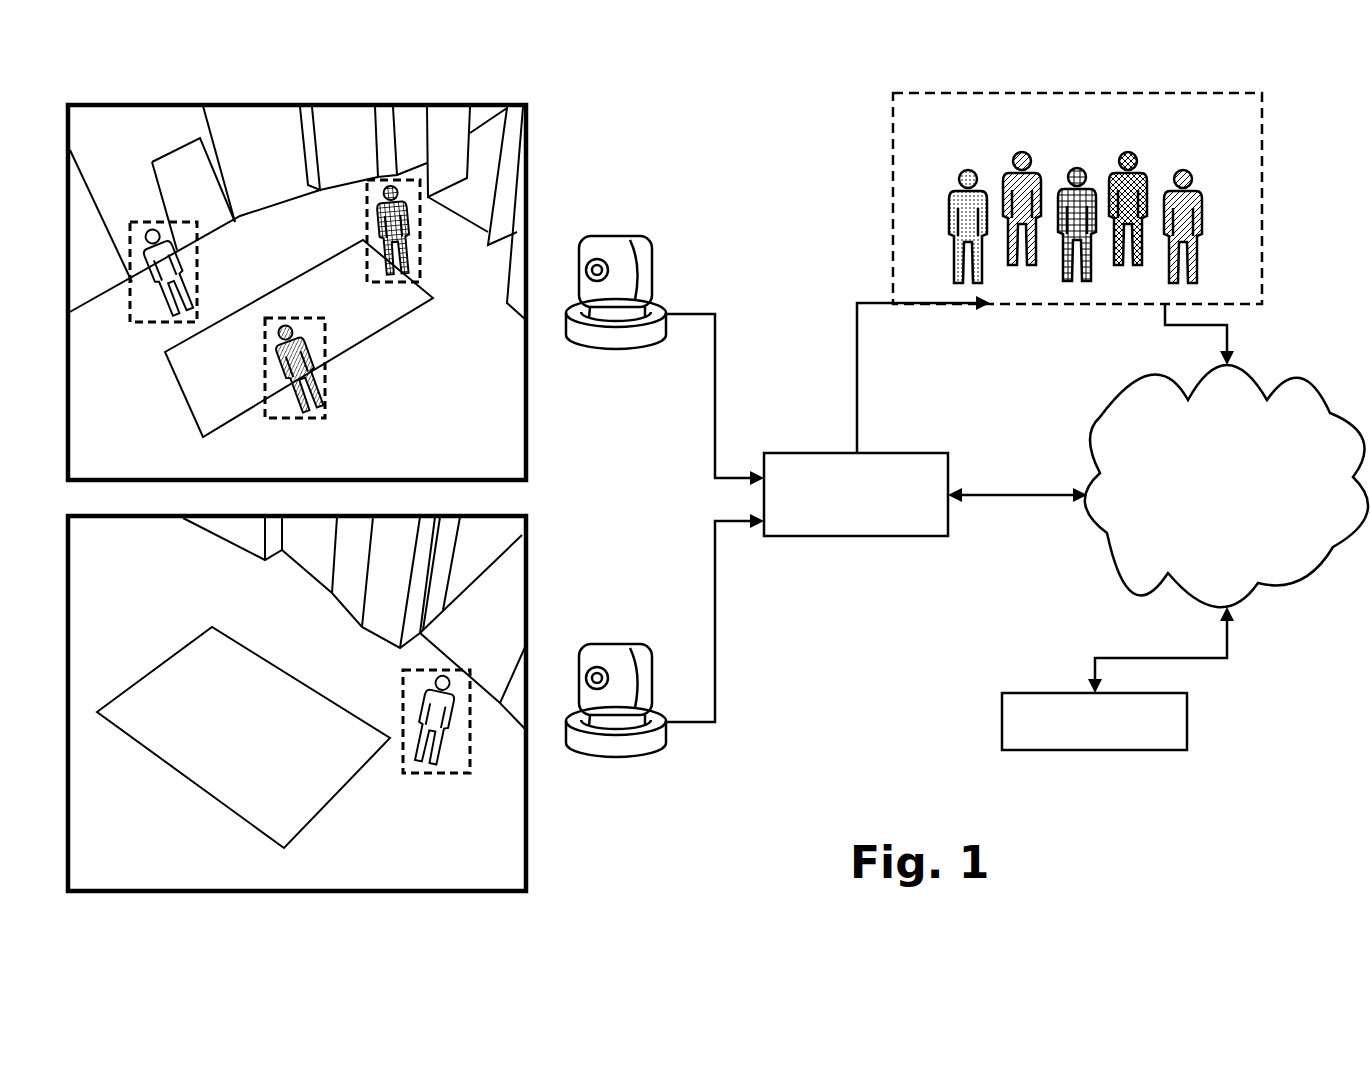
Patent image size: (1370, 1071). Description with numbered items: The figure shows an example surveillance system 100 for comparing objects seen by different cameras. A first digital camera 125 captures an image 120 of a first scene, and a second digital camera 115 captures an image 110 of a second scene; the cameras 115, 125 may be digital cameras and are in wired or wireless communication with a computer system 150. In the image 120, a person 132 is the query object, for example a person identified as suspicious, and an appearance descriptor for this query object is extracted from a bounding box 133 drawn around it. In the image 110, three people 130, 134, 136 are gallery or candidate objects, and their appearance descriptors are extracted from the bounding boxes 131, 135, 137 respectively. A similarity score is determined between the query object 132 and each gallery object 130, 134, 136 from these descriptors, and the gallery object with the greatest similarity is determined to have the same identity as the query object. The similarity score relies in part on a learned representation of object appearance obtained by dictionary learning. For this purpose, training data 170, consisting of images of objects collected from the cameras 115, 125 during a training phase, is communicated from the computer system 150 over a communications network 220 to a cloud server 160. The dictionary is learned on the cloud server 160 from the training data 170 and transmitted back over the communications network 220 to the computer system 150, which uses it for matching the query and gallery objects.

The surveillance system 100 is at (120, 82).
The image of second scene 110 is at (526, 117).
The second digital camera 115 is at (623, 237).
The image of first scene 120 is at (526, 853).
The first digital camera 125 is at (621, 644).
The gallery object 130 is at (142, 223).
The bounding box 131 is at (148, 323).
The query object 132 is at (443, 748).
The bounding box 133 is at (408, 765).
The gallery object 134 is at (290, 318).
The bounding box 135 is at (325, 388).
The gallery object 136 is at (405, 252).
The bounding box 137 is at (400, 283).
The computer system 150 is at (863, 537).
The cloud server 160 is at (1048, 751).
The training data 170 is at (893, 200).
The communications network 220 is at (1103, 415).